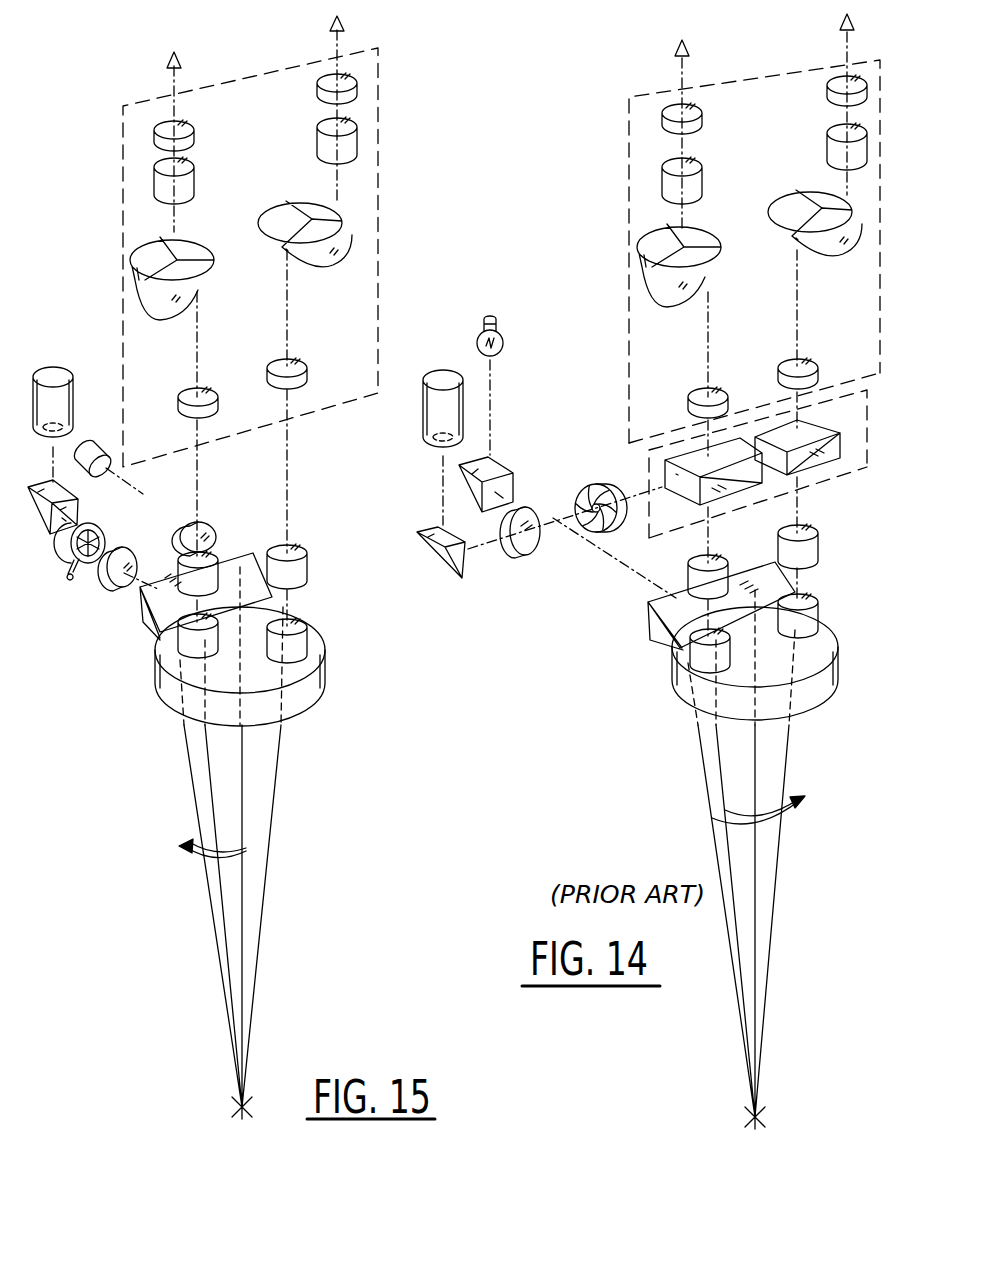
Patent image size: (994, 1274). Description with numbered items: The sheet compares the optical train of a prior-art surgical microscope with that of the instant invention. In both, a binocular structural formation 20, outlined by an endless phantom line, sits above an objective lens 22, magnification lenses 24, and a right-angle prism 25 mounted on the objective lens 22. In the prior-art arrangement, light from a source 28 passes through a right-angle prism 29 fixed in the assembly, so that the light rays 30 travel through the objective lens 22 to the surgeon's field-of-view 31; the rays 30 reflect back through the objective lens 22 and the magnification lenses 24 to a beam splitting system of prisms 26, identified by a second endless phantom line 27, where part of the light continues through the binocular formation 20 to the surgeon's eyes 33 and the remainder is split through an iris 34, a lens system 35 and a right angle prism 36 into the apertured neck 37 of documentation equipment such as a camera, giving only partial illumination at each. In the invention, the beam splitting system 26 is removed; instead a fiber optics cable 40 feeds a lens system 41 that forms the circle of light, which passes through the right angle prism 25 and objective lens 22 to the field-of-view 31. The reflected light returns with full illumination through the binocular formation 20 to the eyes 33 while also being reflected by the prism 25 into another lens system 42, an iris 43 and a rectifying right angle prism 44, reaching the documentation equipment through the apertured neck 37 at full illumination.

In FIG. 15, the binocular structural formation 20 is at (378, 128).
In FIG. 14, the binocular structural formation 20 is at (628, 170).
In FIG. 15, the objective lens 22 is at (322, 676).
In FIG. 14, the objective lens 22 is at (835, 660).
In FIG. 15, the magnification lenses 24 is at (316, 606).
In FIG. 14, the magnification lenses 24 is at (823, 588).
In FIG. 15, the right-angle prism 25 is at (139, 622).
In FIG. 14, the right-angle prism 25 is at (647, 622).
In FIG. 14, the beam splitting system of prisms 26 is at (783, 428).
In FIG. 14, the endless phantom line 27 is at (834, 478).
In FIG. 14, the light source 28 is at (503, 337).
In FIG. 14, the right-angle prism 29 is at (506, 470).
In FIG. 15, the light rays 30 is at (143, 494).
In FIG. 14, the light rays 30 is at (600, 556).
In FIG. 15, the field-of-view 31 is at (240, 1113).
In FIG. 14, the field-of-view 31 is at (753, 1123).
In FIG. 15, the eyes of the surgeon 33 is at (330, 20).
In FIG. 14, the eyes of the surgeon 33 is at (840, 20).
In FIG. 14, the iris 34 is at (592, 484).
In FIG. 14, the lens system 35 is at (530, 556).
In FIG. 14, the right angle prism 36 is at (461, 578).
In FIG. 15, the apertured neck 37 is at (67, 371).
In FIG. 14, the apertured neck 37 is at (424, 428).
In FIG. 15, the fiber optics cable 40 is at (90, 442).
In FIG. 15, the lens system 41 is at (198, 520).
In FIG. 15, the lens system 42 is at (111, 585).
In FIG. 15, the iris 43 is at (98, 526).
In FIG. 15, the rectifying right angle prism 44 is at (57, 534).